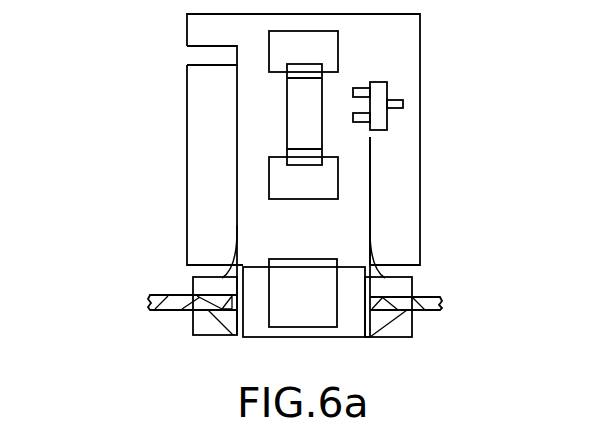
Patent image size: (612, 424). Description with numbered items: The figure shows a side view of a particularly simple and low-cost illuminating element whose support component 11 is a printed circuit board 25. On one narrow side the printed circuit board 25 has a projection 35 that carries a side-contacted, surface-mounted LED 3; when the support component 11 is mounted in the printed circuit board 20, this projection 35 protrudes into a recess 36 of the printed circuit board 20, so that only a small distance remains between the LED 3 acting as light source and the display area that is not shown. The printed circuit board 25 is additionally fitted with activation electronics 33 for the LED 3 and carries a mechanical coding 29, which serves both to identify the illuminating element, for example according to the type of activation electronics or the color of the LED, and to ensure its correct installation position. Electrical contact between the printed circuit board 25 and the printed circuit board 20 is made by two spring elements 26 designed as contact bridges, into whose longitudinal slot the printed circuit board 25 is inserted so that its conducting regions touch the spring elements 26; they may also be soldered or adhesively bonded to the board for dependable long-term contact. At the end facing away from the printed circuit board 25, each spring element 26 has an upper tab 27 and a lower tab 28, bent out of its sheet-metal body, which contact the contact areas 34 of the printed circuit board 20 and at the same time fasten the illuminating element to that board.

The LED 3 is at (300, 300).
The support component 11 is at (437, 127).
The printed circuit board 20 is at (180, 302).
The printed circuit board 25 is at (223, 80).
The spring element 26 is at (370, 180).
The upper tab 27 is at (400, 284).
The lower tab 28 is at (405, 327).
The mechanical coding 29 is at (213, 57).
The activation electronics 33 is at (370, 73).
The contact areas 34 is at (190, 295).
The projection 35 is at (257, 315).
The recess 36 is at (229, 302).